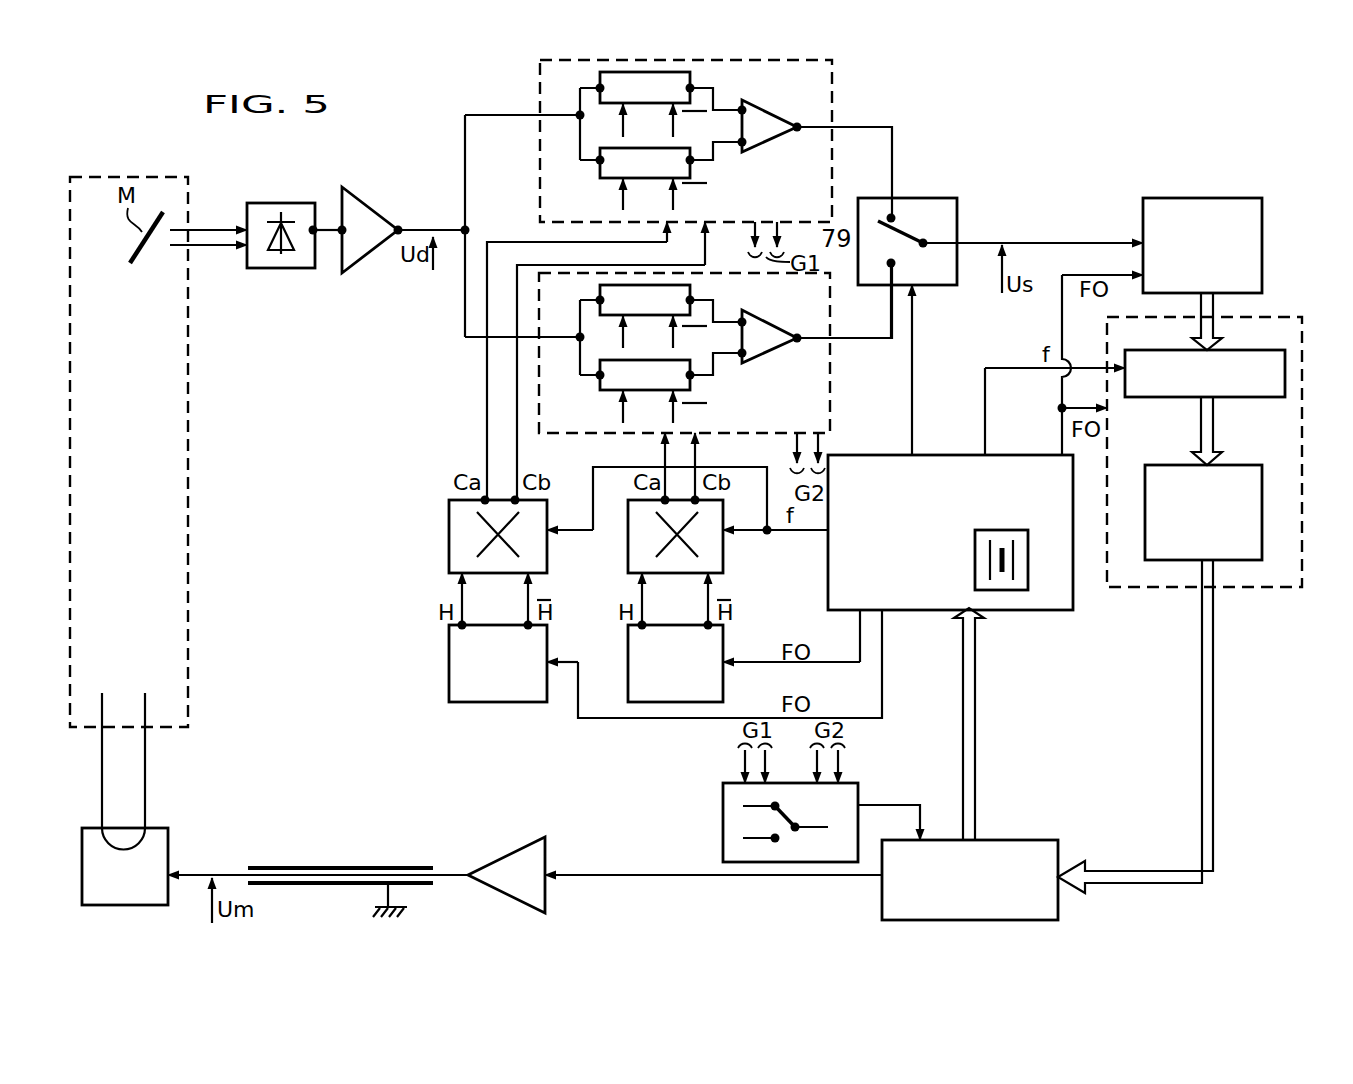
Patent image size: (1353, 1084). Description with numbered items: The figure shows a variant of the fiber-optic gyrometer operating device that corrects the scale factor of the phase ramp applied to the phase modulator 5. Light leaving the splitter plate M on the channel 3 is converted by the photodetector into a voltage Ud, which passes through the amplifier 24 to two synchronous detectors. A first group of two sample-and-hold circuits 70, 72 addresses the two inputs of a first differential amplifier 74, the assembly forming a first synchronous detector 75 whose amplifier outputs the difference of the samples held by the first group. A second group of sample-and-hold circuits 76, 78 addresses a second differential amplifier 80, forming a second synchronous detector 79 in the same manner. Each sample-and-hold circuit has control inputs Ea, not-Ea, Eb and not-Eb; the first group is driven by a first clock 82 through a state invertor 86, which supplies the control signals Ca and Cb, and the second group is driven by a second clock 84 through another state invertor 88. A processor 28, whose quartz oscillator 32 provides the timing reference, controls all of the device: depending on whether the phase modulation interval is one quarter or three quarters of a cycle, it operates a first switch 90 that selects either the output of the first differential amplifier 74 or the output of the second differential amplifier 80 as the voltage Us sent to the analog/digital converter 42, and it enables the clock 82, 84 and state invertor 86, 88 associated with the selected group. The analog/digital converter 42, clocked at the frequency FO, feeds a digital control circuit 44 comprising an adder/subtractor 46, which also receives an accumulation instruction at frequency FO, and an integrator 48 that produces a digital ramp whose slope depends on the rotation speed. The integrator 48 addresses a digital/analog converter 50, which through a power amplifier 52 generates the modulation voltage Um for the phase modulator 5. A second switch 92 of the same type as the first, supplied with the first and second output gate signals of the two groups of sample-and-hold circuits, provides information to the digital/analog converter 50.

The channel 3 is at (212, 228).
The phase modulator 5 is at (172, 846).
The amplifier 24 is at (380, 206).
The processor 28 is at (950, 512).
The quartz oscillator 32 is at (998, 530).
The analog/digital converter 42 is at (1218, 198).
The digital control circuit 44 is at (1227, 452).
The adder/subtractor 46 is at (1143, 397).
The integrator 48 is at (1245, 465).
The digital/analog converter 50 is at (1020, 840).
The power amplifier 52 is at (510, 856).
The sample-and-hold circuit 70 is at (690, 77).
The sample-and-hold circuit 72 is at (690, 181).
The first differential amplifier 74 is at (762, 143).
The first synchronous detector 75 is at (715, 141).
The sample-and-hold circuit 76 is at (690, 291).
The sample-and-hold circuit 78 is at (690, 388).
The second synchronous detector 79 is at (684, 353).
The second differential amplifier 80 is at (775, 331).
The first clock 82 is at (449, 665).
The second clock 84 is at (628, 665).
The state invertor 86 is at (449, 530).
The state invertor 88 is at (628, 537).
The changeover switch 90 is at (928, 198).
The changeover switch 92 is at (858, 795).